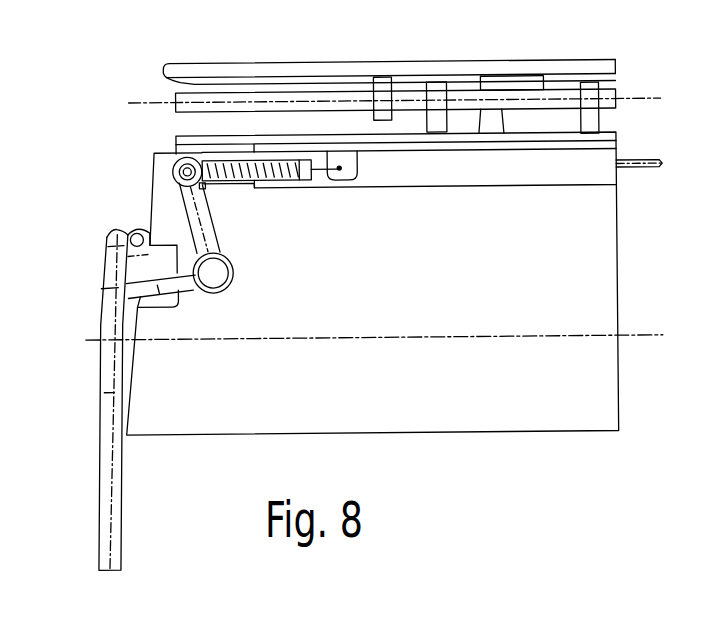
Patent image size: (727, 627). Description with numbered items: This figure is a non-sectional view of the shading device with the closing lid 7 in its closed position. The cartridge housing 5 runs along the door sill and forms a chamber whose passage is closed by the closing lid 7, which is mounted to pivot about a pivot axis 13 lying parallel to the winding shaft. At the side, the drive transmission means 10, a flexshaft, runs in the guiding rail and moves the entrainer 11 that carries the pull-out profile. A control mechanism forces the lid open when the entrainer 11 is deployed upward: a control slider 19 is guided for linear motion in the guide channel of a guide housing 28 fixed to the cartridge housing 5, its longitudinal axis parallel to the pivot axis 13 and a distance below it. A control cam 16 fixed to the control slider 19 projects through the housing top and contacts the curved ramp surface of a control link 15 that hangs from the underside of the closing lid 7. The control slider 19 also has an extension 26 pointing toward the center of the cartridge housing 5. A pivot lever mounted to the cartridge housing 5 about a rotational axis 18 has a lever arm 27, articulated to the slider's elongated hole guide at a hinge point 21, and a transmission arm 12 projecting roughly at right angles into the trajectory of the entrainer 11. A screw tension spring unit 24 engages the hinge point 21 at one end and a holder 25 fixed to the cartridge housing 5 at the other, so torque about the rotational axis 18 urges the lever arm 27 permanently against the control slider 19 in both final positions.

The cartridge housing 5 is at (470, 397).
The closing lid 7 is at (454, 62).
The drive transmission means 10 is at (108, 508).
The entrainer 11 is at (105, 253).
The transmission arm 12 is at (180, 287).
The pivot axis 13 is at (617, 88).
The control link 15 is at (512, 110).
The control cam 16 is at (493, 125).
The rotational axis 18 is at (225, 277).
The control slider 19 is at (243, 187).
The hinge point 21 is at (152, 175).
The tension spring unit 24 is at (288, 180).
The holder 25 is at (343, 172).
The extension 26 is at (643, 168).
The lever arm 27 is at (208, 208).
The guide housing 28 is at (475, 175).